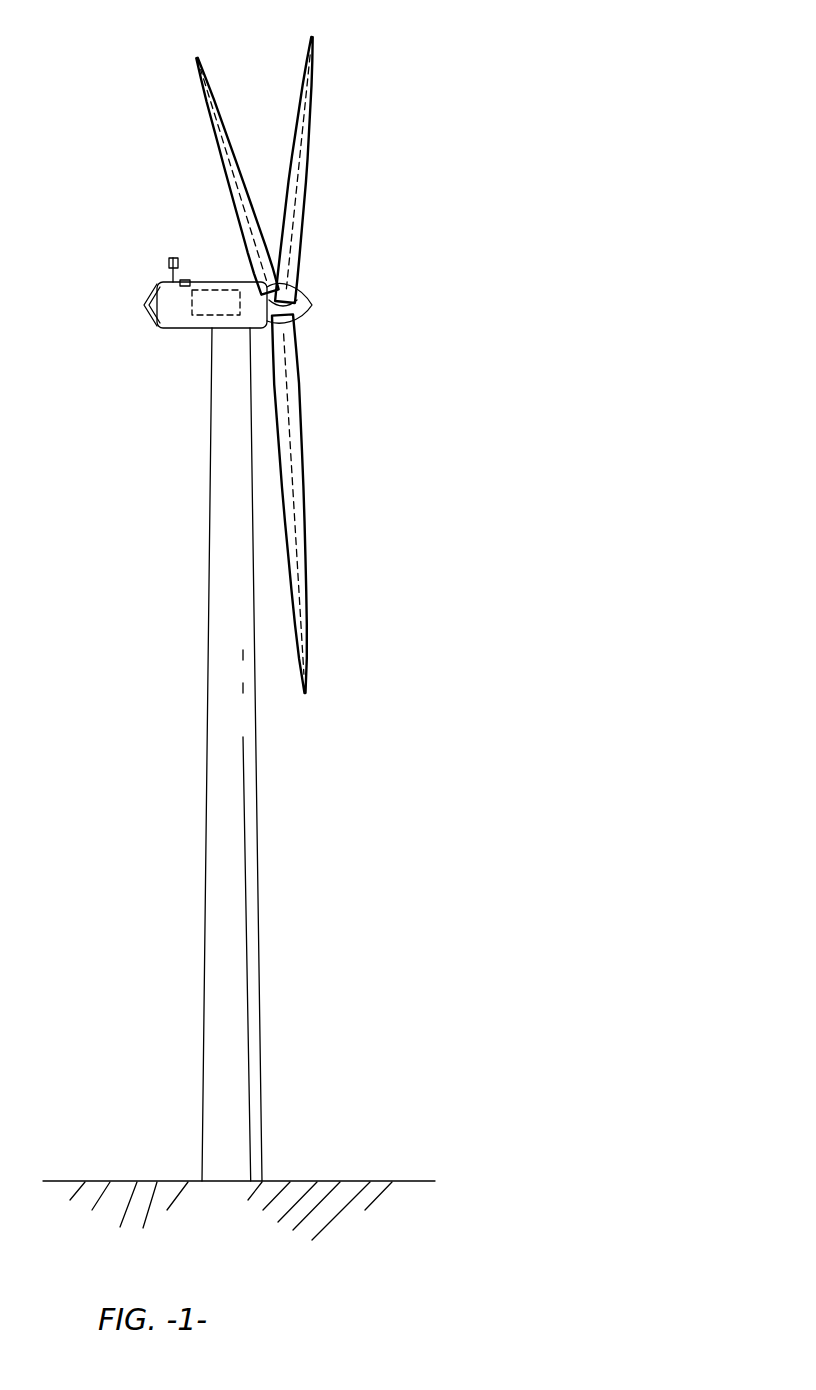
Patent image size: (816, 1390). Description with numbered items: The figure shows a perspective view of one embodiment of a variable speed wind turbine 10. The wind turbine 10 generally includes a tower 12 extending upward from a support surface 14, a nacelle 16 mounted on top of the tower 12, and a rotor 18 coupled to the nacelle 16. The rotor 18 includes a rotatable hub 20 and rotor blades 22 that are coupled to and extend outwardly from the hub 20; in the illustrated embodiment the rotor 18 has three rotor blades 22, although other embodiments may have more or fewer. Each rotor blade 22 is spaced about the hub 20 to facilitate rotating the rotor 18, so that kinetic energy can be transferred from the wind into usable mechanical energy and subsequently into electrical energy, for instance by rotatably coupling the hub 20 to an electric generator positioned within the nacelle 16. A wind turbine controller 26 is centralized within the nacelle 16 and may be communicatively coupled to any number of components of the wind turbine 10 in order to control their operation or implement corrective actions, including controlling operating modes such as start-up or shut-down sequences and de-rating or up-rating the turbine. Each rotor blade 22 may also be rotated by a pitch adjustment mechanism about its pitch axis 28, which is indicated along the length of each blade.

The wind turbine 10 is at (412, 117).
The tower 12 is at (215, 872).
The support surface 14 is at (127, 1180).
The nacelle 16 is at (188, 328).
The rotor 18 is at (294, 351).
The rotatable hub 20 is at (312, 303).
The rotor blade 22 is at (277, 351).
The wind turbine controller 26 is at (222, 287).
The pitch axis 28 is at (230, 185).